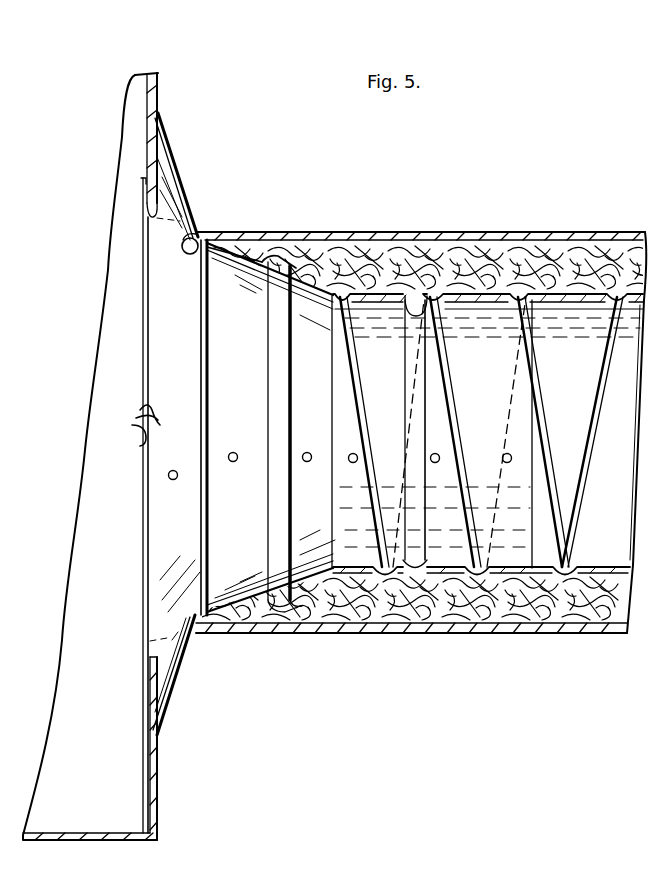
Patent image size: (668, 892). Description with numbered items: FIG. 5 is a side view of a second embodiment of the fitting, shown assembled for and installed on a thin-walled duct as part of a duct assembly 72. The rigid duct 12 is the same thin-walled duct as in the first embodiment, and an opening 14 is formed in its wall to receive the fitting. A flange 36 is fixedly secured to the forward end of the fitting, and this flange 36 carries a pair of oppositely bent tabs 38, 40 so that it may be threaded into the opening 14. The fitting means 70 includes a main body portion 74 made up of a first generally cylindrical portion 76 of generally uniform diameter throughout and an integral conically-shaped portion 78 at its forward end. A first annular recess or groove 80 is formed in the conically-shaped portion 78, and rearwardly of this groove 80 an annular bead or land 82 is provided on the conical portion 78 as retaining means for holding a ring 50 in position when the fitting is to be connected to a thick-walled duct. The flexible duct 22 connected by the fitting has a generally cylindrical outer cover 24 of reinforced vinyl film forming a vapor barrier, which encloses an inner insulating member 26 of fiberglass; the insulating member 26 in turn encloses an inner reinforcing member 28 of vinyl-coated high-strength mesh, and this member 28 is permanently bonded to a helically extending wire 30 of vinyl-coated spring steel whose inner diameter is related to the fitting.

The duct 12 is at (158, 74).
The opening 14 is at (122, 236).
The duct 22 is at (412, 228).
The outer cover 24 is at (600, 232).
The insulating member 26 is at (612, 607).
The reinforcing member 28 is at (603, 562).
The helically extending wire 30 is at (588, 450).
The flange 36 is at (147, 660).
The tab 38 is at (140, 433).
The tab 40 is at (150, 415).
The ring 50 is at (180, 178).
The fitting means 70 is at (537, 537).
The duct assembly 72 is at (232, 722).
The main body portion 74 is at (440, 542).
The first generally cylindrical portion 76 is at (480, 305).
The conically-shaped portion 78 is at (240, 262).
The annular groove 80 is at (192, 237).
The annular bead or land 82 is at (280, 268).